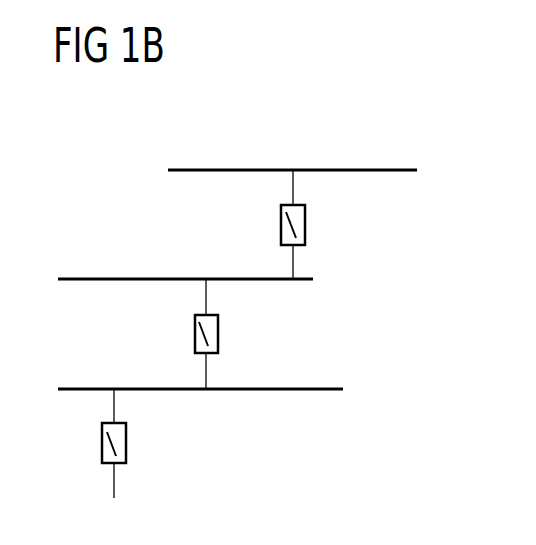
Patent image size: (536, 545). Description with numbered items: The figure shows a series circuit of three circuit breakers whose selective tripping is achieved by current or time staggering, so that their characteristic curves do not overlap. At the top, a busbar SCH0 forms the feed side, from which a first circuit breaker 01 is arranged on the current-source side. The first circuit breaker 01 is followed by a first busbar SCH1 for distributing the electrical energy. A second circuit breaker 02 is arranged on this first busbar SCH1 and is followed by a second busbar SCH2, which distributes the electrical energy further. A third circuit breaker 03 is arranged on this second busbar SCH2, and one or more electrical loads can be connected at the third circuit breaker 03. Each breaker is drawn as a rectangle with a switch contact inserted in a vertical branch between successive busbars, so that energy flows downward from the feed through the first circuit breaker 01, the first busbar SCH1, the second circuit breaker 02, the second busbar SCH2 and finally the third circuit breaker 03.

The busbar / switchgear level 0 SCH0 is at (229, 168).
The first busbar SCH1 is at (117, 277).
The second busbar SCH2 is at (78, 387).
The first circuit breaker 01 is at (342, 228).
The second circuit breaker 02 is at (253, 338).
The third circuit breaker 03 is at (163, 448).